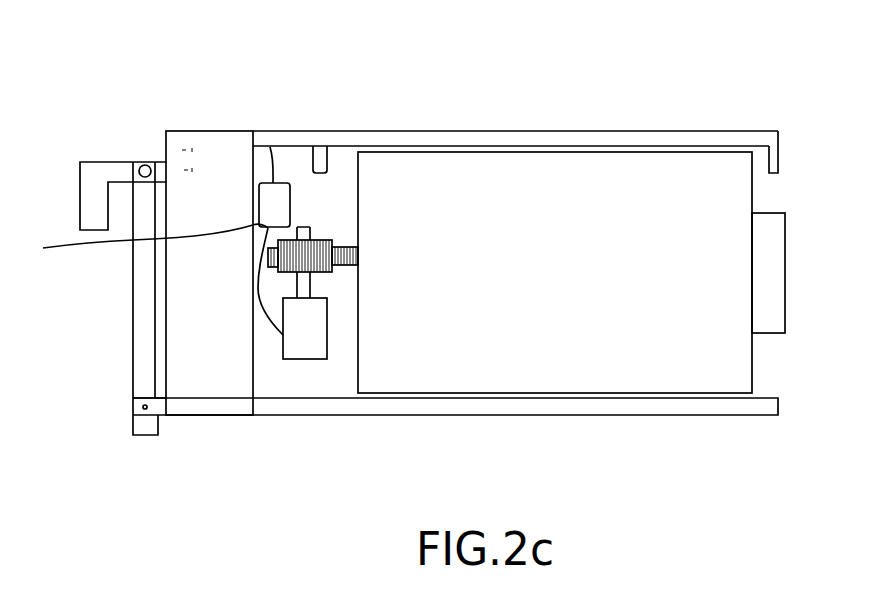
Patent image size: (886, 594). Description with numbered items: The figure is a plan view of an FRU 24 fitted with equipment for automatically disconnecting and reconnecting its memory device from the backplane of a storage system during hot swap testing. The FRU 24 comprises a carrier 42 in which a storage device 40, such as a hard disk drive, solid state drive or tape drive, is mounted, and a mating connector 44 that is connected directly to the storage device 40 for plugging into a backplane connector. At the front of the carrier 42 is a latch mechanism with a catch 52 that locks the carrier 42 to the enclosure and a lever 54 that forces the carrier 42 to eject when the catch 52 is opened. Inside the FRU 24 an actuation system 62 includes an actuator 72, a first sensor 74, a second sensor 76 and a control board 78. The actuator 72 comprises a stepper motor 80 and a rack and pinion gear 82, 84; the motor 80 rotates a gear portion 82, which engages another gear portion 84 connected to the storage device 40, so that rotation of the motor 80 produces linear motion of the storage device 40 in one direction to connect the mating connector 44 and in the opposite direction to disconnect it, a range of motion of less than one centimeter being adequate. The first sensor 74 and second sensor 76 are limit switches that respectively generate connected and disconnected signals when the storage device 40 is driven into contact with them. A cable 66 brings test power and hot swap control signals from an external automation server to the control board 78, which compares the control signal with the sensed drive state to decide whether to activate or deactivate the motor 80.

The FRU 24 is at (817, 105).
The storage device 40 is at (667, 380).
The carrier 42 is at (184, 131).
The mating connector 44 is at (785, 285).
The catch 52 is at (92, 162).
The lever 54 is at (132, 380).
The actuation system 62 is at (293, 152).
The cable 66 is at (107, 246).
The actuator 72 is at (310, 373).
The first sensor 74 is at (331, 181).
The second sensor 76 is at (760, 183).
The control board 78 is at (270, 147).
The stepper motor 80 is at (278, 358).
The rack and pinion gear portion 82 is at (323, 270).
The rack and pinion gear portion 84 is at (350, 268).